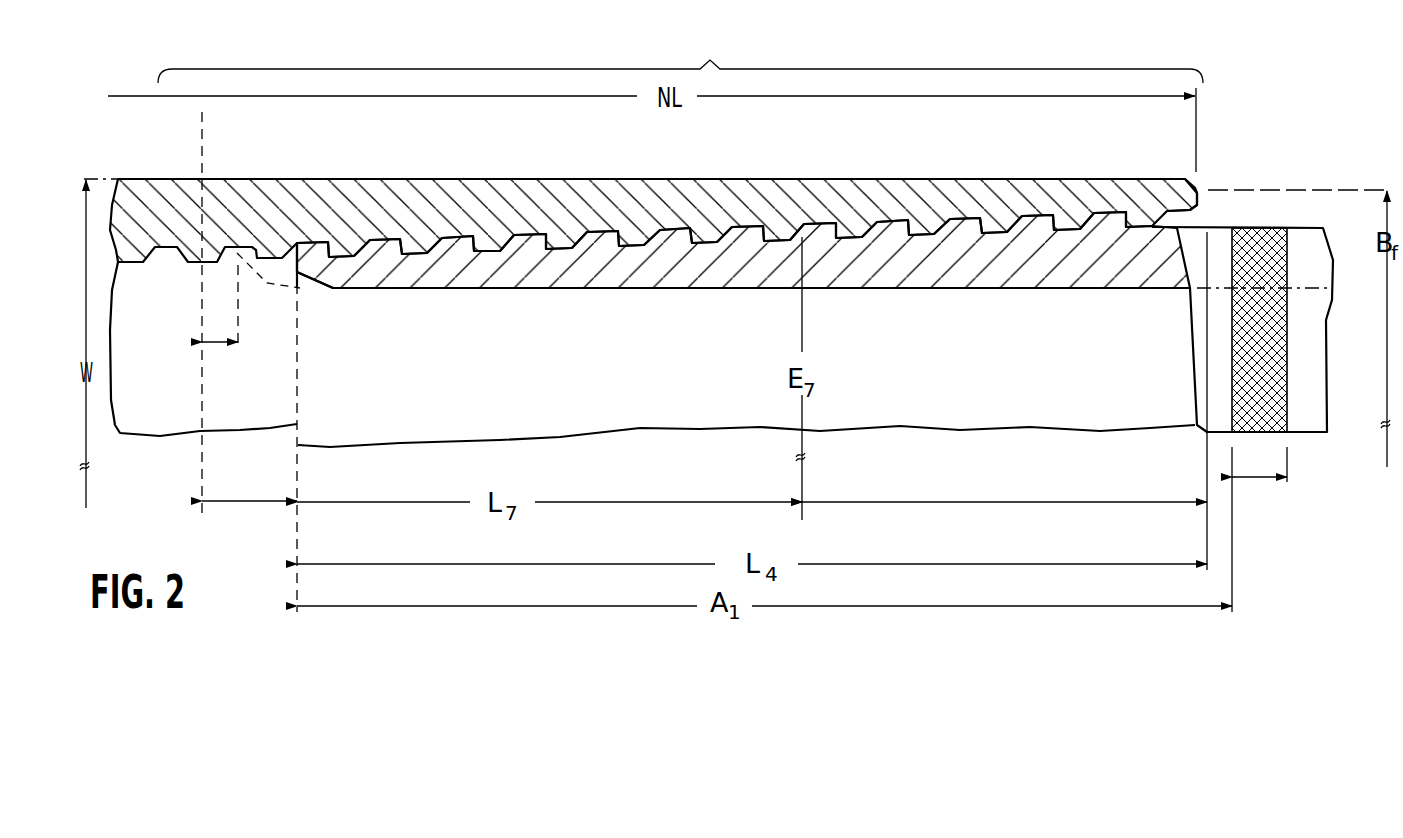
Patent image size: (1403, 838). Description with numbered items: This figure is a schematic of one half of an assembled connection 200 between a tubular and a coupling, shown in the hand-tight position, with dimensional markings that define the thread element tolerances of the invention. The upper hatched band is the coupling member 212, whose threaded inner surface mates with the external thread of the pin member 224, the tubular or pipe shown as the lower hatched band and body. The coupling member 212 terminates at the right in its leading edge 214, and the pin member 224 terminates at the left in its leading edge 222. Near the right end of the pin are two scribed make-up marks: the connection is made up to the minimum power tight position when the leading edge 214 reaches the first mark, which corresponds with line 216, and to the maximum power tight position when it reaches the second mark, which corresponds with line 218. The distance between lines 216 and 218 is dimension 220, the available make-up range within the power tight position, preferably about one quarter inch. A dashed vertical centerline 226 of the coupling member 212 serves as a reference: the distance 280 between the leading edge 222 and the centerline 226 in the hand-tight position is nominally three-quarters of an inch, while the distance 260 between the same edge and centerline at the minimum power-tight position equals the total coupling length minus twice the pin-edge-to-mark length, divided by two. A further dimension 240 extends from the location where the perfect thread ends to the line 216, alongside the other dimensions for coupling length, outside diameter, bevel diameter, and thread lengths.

The assembled connection 200 is at (692, 50).
The coupling member 212 is at (508, 170).
The leading edge of coupling member 214 is at (1188, 175).
The line corresponding to first scribed make-up mark 216 is at (1232, 337).
The line corresponding to second scribed make-up mark 218 is at (1287, 340).
The make-up range dimension 220 is at (1262, 482).
The leading edge of pin member 222 is at (293, 252).
The pin member 224 is at (996, 304).
The vertical centerline of coupling member 226 is at (200, 477).
The distance from perfect-thread end to make-up mark line 240 is at (1008, 500).
The pin leading edge to coupling centerline distance at minimum power-tight position 260 is at (223, 347).
The pin leading edge to coupling centerline distance at hand-tight position 280 is at (250, 507).